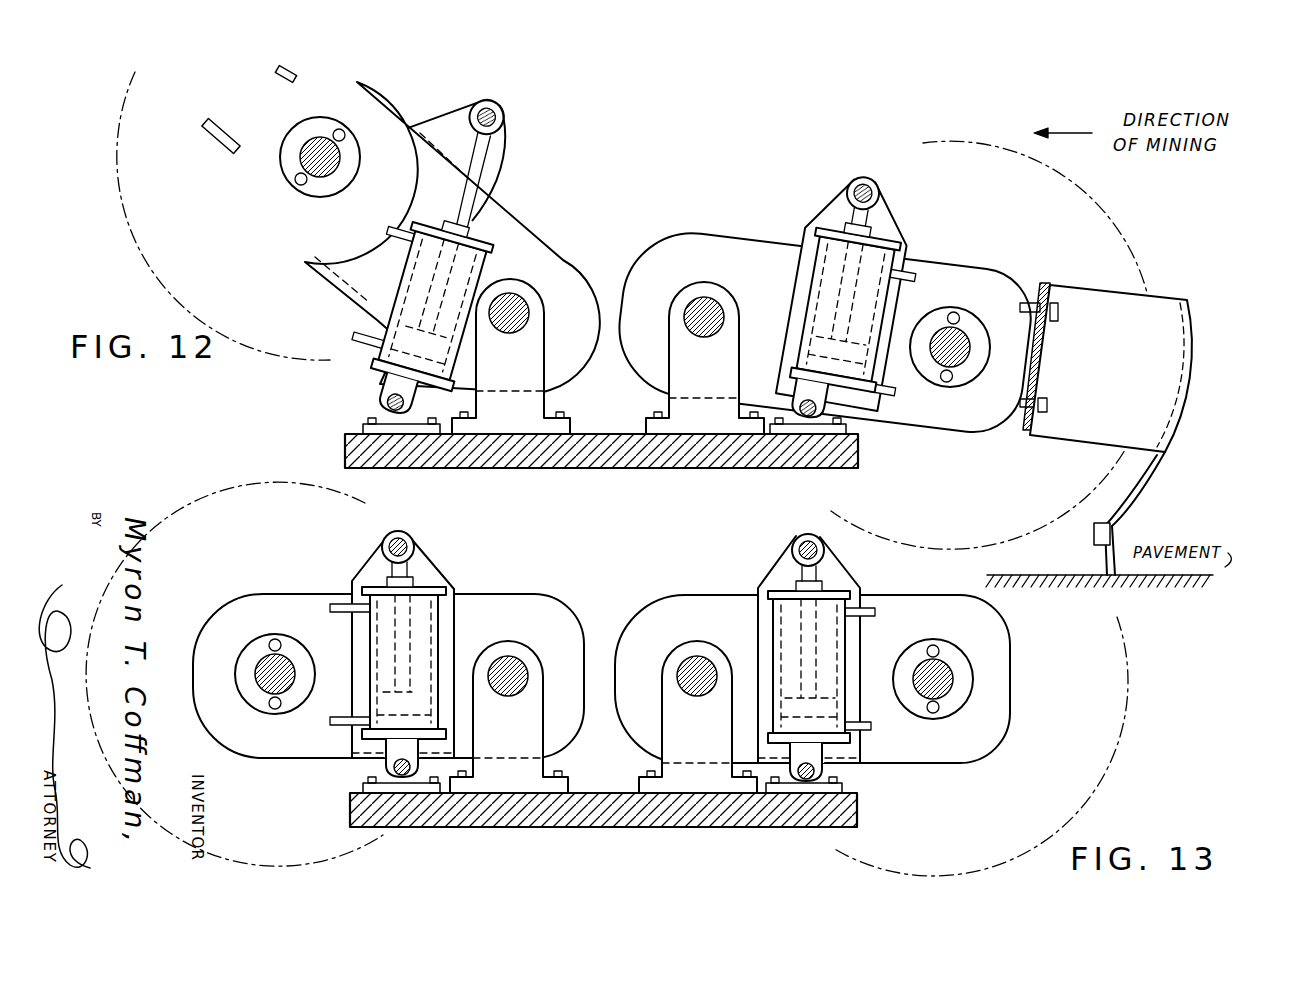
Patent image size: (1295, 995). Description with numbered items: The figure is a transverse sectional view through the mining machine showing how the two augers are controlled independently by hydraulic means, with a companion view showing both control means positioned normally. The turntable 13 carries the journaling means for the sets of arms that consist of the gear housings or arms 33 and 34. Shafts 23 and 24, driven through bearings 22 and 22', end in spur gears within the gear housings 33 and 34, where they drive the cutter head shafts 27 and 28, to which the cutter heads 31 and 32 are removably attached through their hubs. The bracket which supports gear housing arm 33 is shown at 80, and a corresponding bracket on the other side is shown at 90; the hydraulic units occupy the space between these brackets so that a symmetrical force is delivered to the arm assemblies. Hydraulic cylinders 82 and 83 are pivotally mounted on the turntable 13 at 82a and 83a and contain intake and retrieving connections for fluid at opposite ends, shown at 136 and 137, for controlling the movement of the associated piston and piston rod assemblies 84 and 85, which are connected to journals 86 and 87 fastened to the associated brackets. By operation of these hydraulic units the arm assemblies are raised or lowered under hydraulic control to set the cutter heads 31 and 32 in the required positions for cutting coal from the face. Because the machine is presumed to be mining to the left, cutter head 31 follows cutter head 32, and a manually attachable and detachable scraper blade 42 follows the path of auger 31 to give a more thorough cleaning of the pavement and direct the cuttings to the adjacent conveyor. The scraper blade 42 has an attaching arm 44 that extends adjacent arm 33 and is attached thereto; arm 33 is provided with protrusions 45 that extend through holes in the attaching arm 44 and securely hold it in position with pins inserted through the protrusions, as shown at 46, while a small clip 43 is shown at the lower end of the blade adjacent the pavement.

In FIG. 12, the turntable 13 is at (580, 450).
In FIG. 13, the turntable 13 is at (630, 820).
In FIG. 12, the bearing 22 is at (695, 358).
In FIG. 13, the bearing 22 is at (698, 705).
In FIG. 12, the bearing 22' is at (543, 339).
In FIG. 13, the bearing 22' is at (512, 709).
In FIG. 12, the shaft 23 is at (707, 296).
In FIG. 13, the shaft 23 is at (683, 670).
In FIG. 12, the shaft 24 is at (496, 333).
In FIG. 13, the shaft 24 is at (502, 694).
In FIG. 12, the cutter head shaft 27 is at (934, 370).
In FIG. 13, the cutter head shaft 27 is at (955, 679).
In FIG. 12, the cutter head shaft 28 is at (300, 155).
In FIG. 13, the cutter head shaft 28 is at (266, 666).
In FIG. 12, the cutter head 31 is at (1148, 273).
In FIG. 13, the cutter head 31 is at (1095, 801).
In FIG. 12, the cutter head 32 is at (145, 270).
In FIG. 13, the cutter head 32 is at (247, 480).
In FIG. 12, the gear housing arm 33 is at (682, 237).
In FIG. 13, the gear housing arm 33 is at (969, 748).
In FIG. 12, the gear housing arm 34 is at (540, 247).
In FIG. 13, the gear housing arm 34 is at (530, 607).
In FIG. 12, the scraper blade 42 is at (1143, 490).
In FIG. 12, the clip 43 is at (1108, 561).
In FIG. 12, the attaching arm 44 is at (1050, 428).
In FIG. 12, the protrusions 45 is at (280, 78).
In FIG. 12, the pins 46 is at (1040, 398).
In FIG. 12, the bracket 80 is at (892, 235).
In FIG. 13, the bracket 80 is at (780, 561).
In FIG. 12, the hydraulic cylinder 82 is at (862, 316).
In FIG. 13, the hydraulic cylinder 82 is at (830, 708).
In FIG. 12, the pivotal mounting 82a is at (830, 414).
In FIG. 13, the pivotal mounting 82a is at (802, 782).
In FIG. 12, the hydraulic cylinder 83 is at (400, 315).
In FIG. 13, the hydraulic cylinder 83 is at (428, 645).
In FIG. 12, the pivotal mounting 83a is at (392, 404).
In FIG. 13, the pivotal mounting 83a is at (403, 776).
In FIG. 12, the piston and piston rod assembly 84 is at (867, 222).
In FIG. 13, the piston and piston rod assembly 84 is at (800, 572).
In FIG. 12, the piston and piston rod assembly 85 is at (486, 158).
In FIG. 13, the piston and piston rod assembly 85 is at (410, 567).
In FIG. 12, the journal 86 is at (880, 188).
In FIG. 13, the journal 86 is at (800, 543).
In FIG. 12, the journal 87 is at (504, 114).
In FIG. 13, the journal 87 is at (410, 537).
In FIG. 12, the bracket 90 is at (492, 172).
In FIG. 13, the bracket 90 is at (370, 576).
In FIG. 12, the fluid port 136 is at (913, 270).
In FIG. 13, the fluid port 136 is at (877, 613).
In FIG. 12, the fluid port 137 is at (394, 236).
In FIG. 13, the fluid port 137 is at (340, 606).